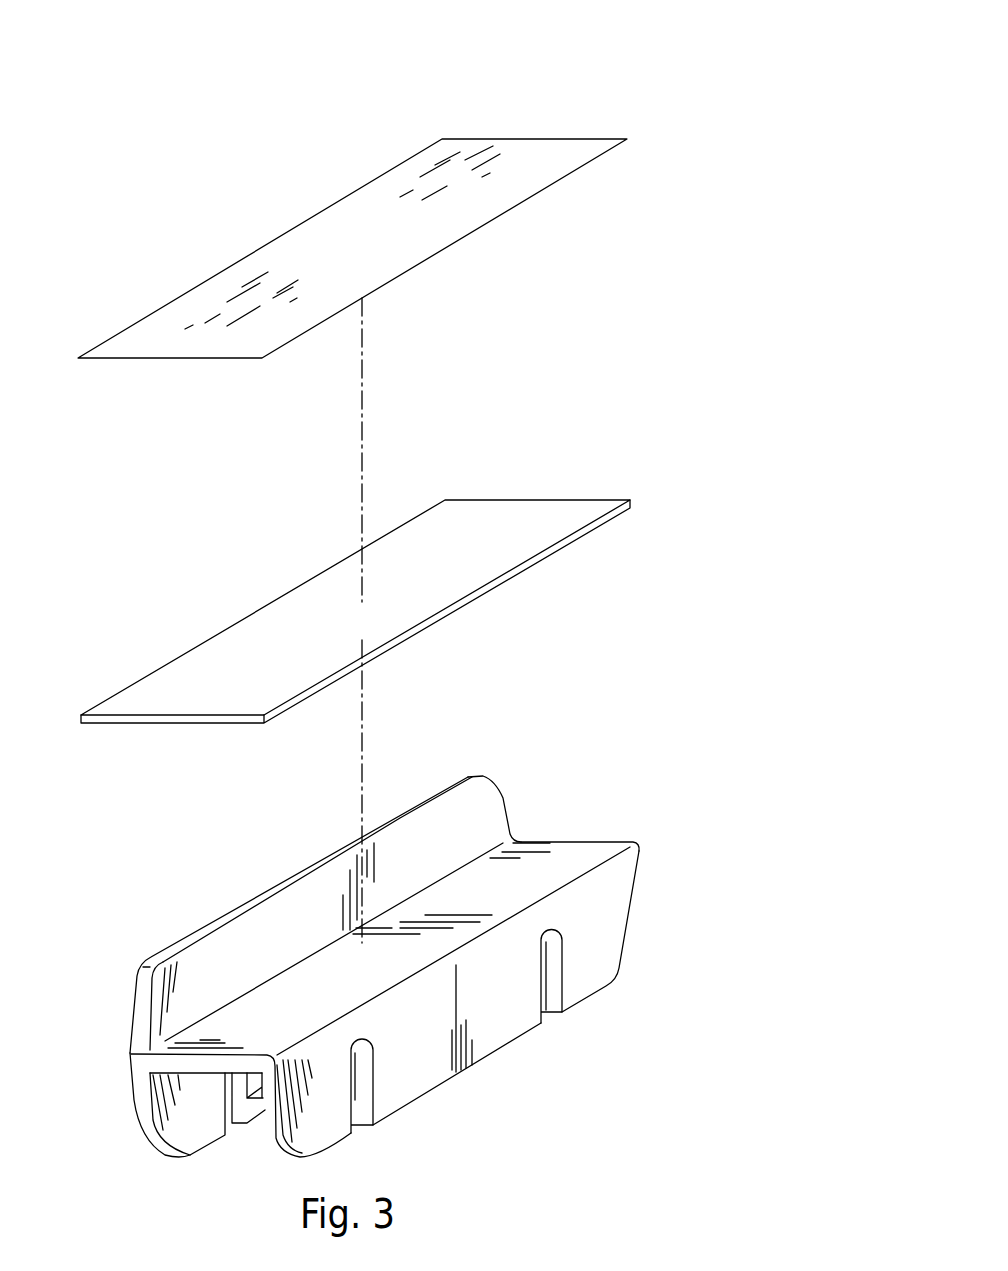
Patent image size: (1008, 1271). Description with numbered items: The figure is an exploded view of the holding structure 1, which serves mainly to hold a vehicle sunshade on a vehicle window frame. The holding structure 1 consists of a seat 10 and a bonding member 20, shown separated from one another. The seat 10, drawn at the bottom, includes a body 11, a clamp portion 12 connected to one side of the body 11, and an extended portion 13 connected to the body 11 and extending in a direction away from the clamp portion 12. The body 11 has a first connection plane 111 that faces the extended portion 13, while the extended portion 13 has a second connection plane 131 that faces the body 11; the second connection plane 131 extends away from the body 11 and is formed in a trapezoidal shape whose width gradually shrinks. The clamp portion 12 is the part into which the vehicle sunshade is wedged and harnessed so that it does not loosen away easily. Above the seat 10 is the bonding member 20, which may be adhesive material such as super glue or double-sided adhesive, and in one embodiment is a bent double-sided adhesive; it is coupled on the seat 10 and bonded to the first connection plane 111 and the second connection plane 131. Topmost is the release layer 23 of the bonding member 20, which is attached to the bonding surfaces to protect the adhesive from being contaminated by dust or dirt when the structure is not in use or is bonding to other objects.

The holding structure 1 is at (656, 162).
The release layer 23 is at (549, 125).
The bonding member 20 is at (563, 481).
The seat 10 is at (501, 764).
The body 11 is at (602, 838).
The first connection plane 111 is at (522, 883).
The clamp portion 12 is at (529, 1020).
The extended portion 13 is at (175, 946).
The second connection plane 131 is at (499, 805).